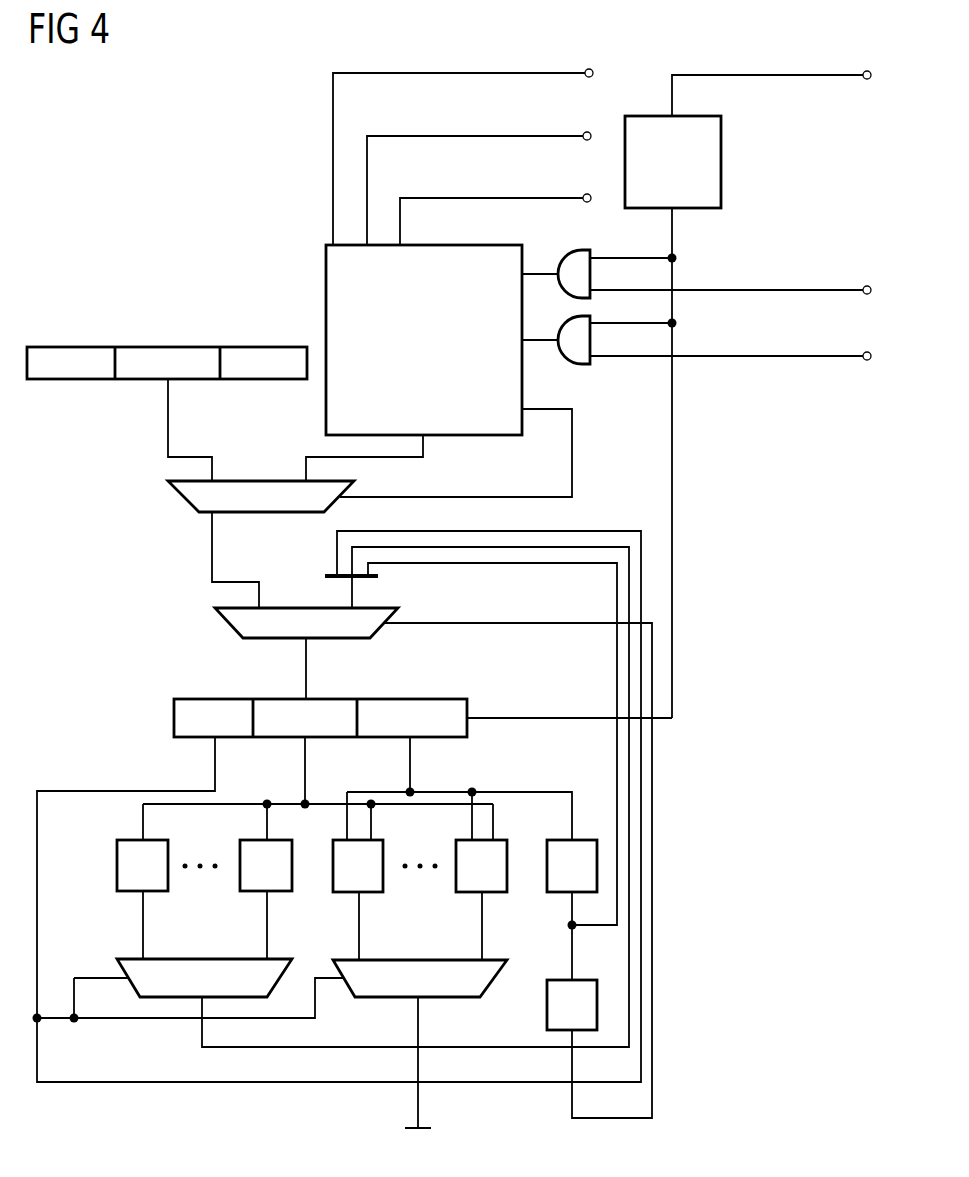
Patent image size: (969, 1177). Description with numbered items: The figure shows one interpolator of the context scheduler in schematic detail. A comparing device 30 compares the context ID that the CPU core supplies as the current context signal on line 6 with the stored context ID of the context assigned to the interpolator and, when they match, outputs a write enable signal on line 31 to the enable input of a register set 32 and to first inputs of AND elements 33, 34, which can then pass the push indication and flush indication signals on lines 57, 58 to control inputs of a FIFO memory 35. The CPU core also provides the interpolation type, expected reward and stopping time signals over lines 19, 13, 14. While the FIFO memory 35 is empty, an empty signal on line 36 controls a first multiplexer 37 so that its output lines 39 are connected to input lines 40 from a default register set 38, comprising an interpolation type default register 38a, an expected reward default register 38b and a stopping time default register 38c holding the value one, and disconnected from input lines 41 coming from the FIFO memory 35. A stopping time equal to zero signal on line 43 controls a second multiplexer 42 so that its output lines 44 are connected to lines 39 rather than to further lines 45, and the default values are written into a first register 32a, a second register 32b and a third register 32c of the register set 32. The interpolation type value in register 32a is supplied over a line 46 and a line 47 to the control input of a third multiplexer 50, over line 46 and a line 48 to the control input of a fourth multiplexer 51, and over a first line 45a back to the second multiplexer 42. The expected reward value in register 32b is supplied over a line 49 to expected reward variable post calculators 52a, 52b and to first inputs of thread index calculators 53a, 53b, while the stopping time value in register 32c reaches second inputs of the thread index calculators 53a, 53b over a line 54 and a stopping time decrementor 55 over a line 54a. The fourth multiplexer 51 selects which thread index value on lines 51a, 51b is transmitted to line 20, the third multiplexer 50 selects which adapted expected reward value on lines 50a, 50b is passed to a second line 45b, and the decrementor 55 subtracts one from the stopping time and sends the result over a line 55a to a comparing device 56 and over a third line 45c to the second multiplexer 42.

The interpolation type line 19 is at (582, 70).
The expected reward line 13 is at (397, 134).
The stopping time line 14 is at (417, 197).
The current context line 6 is at (828, 78).
The comparing device 30 is at (721, 163).
The write enable line 31 is at (672, 455).
The AND element 34 is at (596, 252).
The AND element 33 is at (595, 364).
The flush indication line 58 is at (867, 296).
The push indication line 57 is at (867, 362).
The FIFO memory 35 is at (326, 250).
The empty signal line 36 is at (572, 450).
The default register set 38 is at (128, 300).
The interpolation type default register 38a is at (32, 382).
The expected reward default register 38b is at (122, 382).
The stopping time default register 38c is at (298, 345).
The multiplexer input lines 40 is at (201, 452).
The first multiplexer 37 is at (253, 478).
The multiplexer input lines 41 is at (423, 445).
The multiplexer output lines 39 is at (210, 562).
The second multiplexer 42 is at (300, 605).
The stopping time zero signal line 43 is at (452, 620).
The further lines 45 is at (592, 568).
The first line 45a is at (641, 798).
The second line 45b is at (629, 855).
The third line 45c is at (617, 885).
The multiplexer output lines 44 is at (302, 660).
The register set 32 is at (165, 716).
The first register 32a is at (176, 724).
The second register 32b is at (355, 697).
The third register 32c is at (448, 697).
The interpolation type line 46 is at (215, 752).
The expected reward line 49 is at (305, 752).
The stopping time line 54 is at (410, 752).
The decrementor input line 54a is at (545, 785).
The stopping time decrementor 55 is at (577, 838).
The decremented stopping time line 55a is at (570, 905).
The comparing device 56 is at (546, 1008).
The expected reward variable post calculator 52a is at (116, 856).
The expected reward variable post calculator 52b is at (238, 848).
The thread index calculator 53a is at (385, 850).
The thread index calculator 53b is at (455, 878).
The third multiplexer 50 is at (242, 957).
The post calculator output line 50a is at (143, 942).
The post calculator output line 50b is at (267, 932).
The control line 47 is at (100, 975).
The control line 48 is at (142, 1020).
The fourth multiplexer 51 is at (388, 998).
The thread index calculator output line 51a is at (359, 930).
The thread index calculator output line 51b is at (482, 934).
The output line 20 is at (414, 1100).